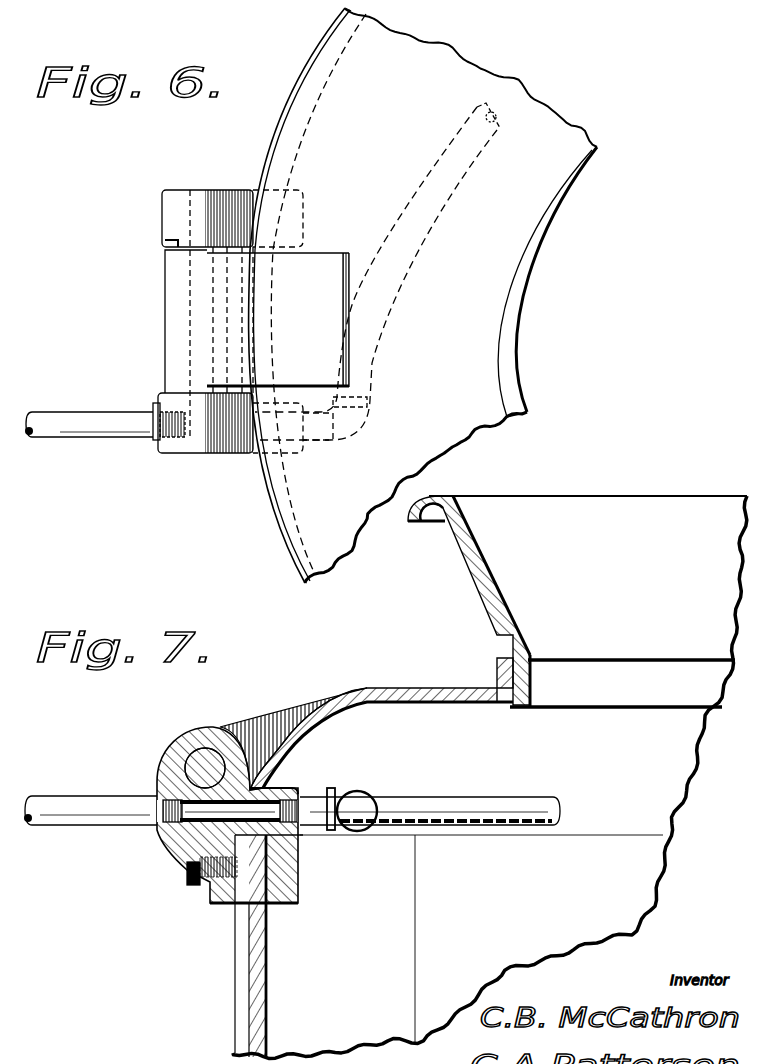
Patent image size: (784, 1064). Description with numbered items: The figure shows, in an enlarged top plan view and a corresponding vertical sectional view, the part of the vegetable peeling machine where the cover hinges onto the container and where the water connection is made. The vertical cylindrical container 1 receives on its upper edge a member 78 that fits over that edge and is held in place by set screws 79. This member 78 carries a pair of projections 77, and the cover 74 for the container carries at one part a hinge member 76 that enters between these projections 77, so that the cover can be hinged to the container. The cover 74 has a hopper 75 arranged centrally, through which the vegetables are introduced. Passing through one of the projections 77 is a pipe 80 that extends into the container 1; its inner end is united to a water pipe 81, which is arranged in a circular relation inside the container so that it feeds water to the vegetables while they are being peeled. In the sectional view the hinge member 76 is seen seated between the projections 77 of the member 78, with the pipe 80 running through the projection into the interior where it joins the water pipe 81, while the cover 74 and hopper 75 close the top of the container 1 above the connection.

In FIG. 6, the container 1 is at (276, 122).
In FIG. 7, the container 1 is at (243, 968).
In FIG. 6, the cover 74 is at (278, 320).
In FIG. 7, the cover 74 is at (417, 670).
In FIG. 7, the hopper 75 is at (490, 777).
In FIG. 6, the hinge member 76 is at (176, 317).
In FIG. 7, the hinge member 76 is at (190, 738).
In FIG. 6, the projections 77 is at (173, 196).
In FIG. 7, the member 78 is at (290, 866).
In FIG. 7, the set screws 79 is at (190, 877).
In FIG. 6, the pipe 80 is at (97, 398).
In FIG. 7, the pipe 80 is at (77, 790).
In FIG. 6, the water pipe 81 is at (388, 302).
In FIG. 7, the water pipe 81 is at (417, 785).